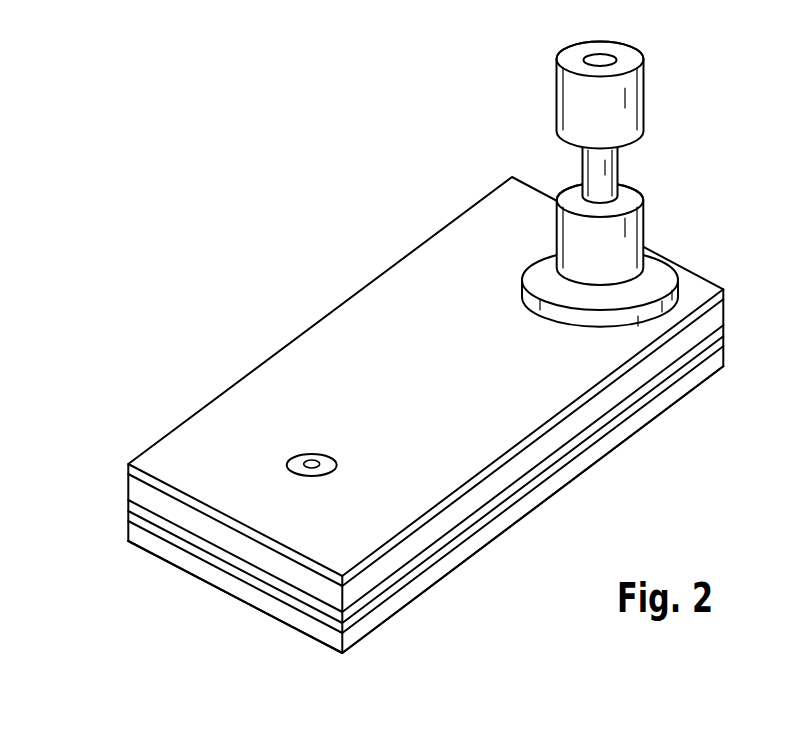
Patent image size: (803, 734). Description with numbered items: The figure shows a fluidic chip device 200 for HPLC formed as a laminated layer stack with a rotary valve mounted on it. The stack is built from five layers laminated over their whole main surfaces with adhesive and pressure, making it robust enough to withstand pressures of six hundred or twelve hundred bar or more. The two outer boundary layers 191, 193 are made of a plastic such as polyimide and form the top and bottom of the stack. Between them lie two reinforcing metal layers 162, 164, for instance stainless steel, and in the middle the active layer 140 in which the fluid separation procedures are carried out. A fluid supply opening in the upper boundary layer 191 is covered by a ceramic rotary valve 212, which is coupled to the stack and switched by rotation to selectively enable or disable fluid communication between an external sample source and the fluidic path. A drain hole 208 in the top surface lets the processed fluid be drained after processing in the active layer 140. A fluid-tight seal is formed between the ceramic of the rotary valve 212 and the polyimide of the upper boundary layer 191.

The fluidic chip device 200 is at (378, 361).
The rotary valve 212 is at (550, 108).
The drain hole 208 is at (290, 465).
The upper boundary layer 191 is at (138, 477).
The reinforcing metal layer 164 is at (142, 492).
The active layer 140 is at (233, 560).
The reinforcing metal layer 162 is at (167, 533).
The outer boundary layer 193 is at (287, 612).